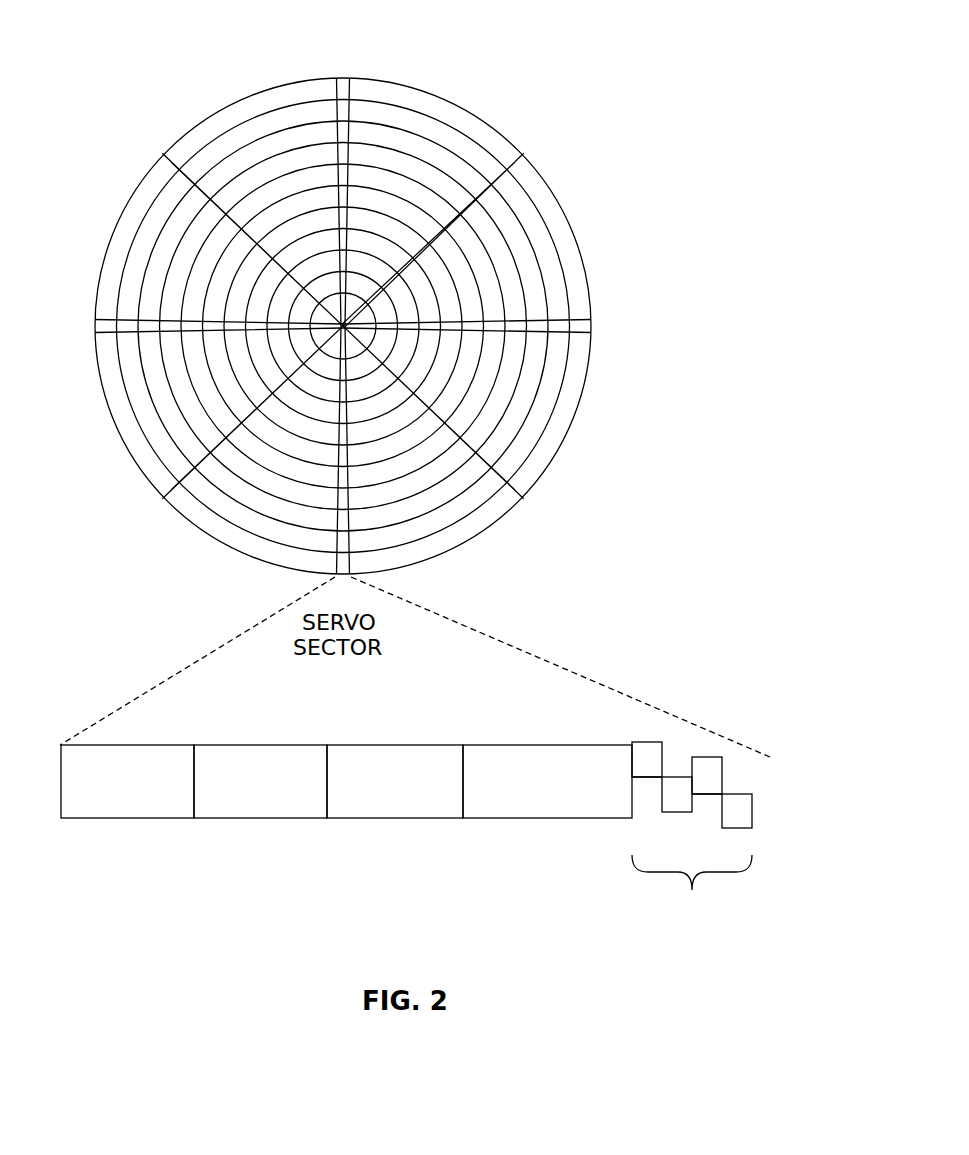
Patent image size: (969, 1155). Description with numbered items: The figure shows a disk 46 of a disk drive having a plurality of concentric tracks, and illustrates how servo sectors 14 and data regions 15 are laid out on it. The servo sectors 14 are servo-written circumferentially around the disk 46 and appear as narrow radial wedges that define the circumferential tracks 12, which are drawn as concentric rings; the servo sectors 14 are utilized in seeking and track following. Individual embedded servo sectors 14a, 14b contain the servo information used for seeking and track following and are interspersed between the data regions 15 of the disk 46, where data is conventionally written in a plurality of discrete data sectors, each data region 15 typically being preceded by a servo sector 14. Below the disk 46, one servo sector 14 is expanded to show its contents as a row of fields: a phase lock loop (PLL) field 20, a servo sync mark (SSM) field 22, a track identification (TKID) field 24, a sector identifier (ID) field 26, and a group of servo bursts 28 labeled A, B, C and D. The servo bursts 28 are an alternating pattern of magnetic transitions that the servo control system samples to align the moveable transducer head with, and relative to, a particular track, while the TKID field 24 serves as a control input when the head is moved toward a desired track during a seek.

The disk 46 is at (185, 52).
The circumferential tracks 12 is at (136, 226).
The servo sectors 14 is at (343, 84).
The embedded servo sector 14a is at (172, 155).
The embedded servo sector 14b is at (100, 327).
The data regions 15 is at (405, 118).
The phase lock loop (PLL) field 20 is at (80, 820).
The servo sync mark (SSM) field 22 is at (215, 820).
The track identification (TKID) field 24 is at (348, 820).
The sector identifier (ID) field 26 is at (488, 820).
The servo bursts 28 is at (640, 737).